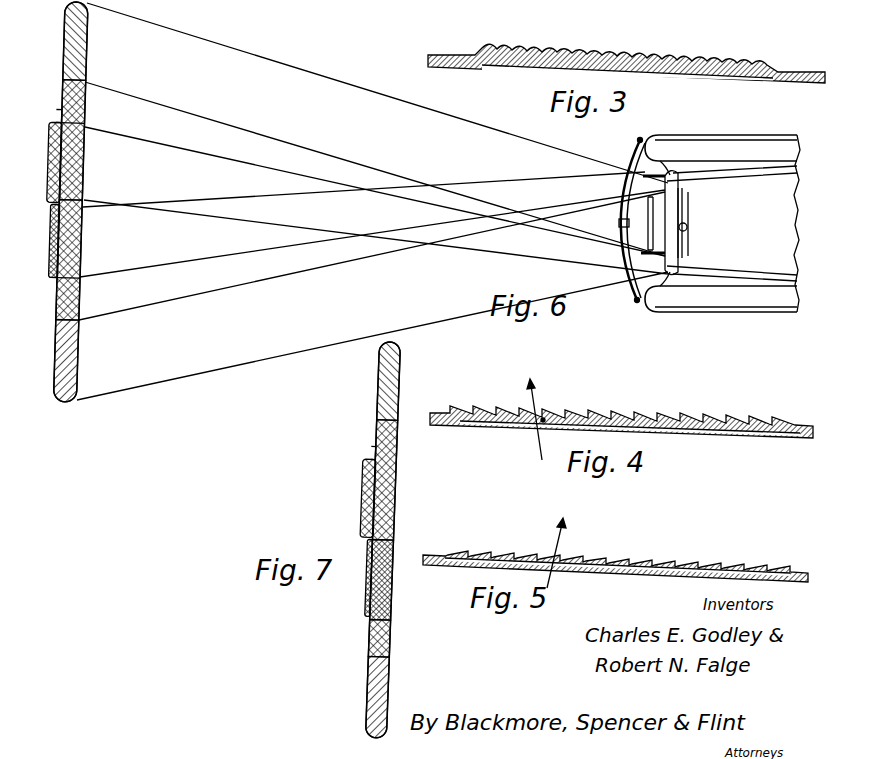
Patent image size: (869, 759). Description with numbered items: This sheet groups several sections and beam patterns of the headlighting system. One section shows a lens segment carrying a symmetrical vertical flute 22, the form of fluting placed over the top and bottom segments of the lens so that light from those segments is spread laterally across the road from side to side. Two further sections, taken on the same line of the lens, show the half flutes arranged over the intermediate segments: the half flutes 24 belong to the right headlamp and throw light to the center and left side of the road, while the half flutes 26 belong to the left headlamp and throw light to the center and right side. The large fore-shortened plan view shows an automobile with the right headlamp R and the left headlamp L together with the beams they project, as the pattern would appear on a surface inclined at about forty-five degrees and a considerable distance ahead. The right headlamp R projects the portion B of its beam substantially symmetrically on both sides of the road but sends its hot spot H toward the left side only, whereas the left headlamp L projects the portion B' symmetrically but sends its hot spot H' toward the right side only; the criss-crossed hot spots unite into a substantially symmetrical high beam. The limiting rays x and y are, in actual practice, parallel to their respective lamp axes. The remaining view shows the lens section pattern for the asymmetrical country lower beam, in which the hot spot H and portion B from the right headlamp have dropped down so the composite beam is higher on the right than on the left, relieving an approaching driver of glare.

In FIG. 3, the flute 22 is at (590, 48).
In FIG. 4, the half flutes 24 is at (582, 413).
In FIG. 5, the half flutes 26 is at (627, 555).
In FIG. 6, the beam portion of right headlamp B is at (63, 41).
In FIG. 7, the beam portion of right headlamp B is at (370, 381).
In FIG. 6, the hot spot of left headlamp H' is at (60, 141).
In FIG. 7, the hot spot of left headlamp H' is at (361, 480).
In FIG. 6, the hot spot of right headlamp H is at (56, 261).
In FIG. 7, the hot spot of right headlamp H is at (356, 598).
In FIG. 6, the beam portion of left headlamp B' is at (54, 375).
In FIG. 7, the beam portion of left headlamp B' is at (352, 696).
In FIG. 6, the right headlamp R is at (673, 183).
In FIG. 6, the left headlamp L is at (669, 272).
In FIG. 6, the limiting ray x is at (252, 201).
In FIG. 6, the limiting ray y is at (300, 174).